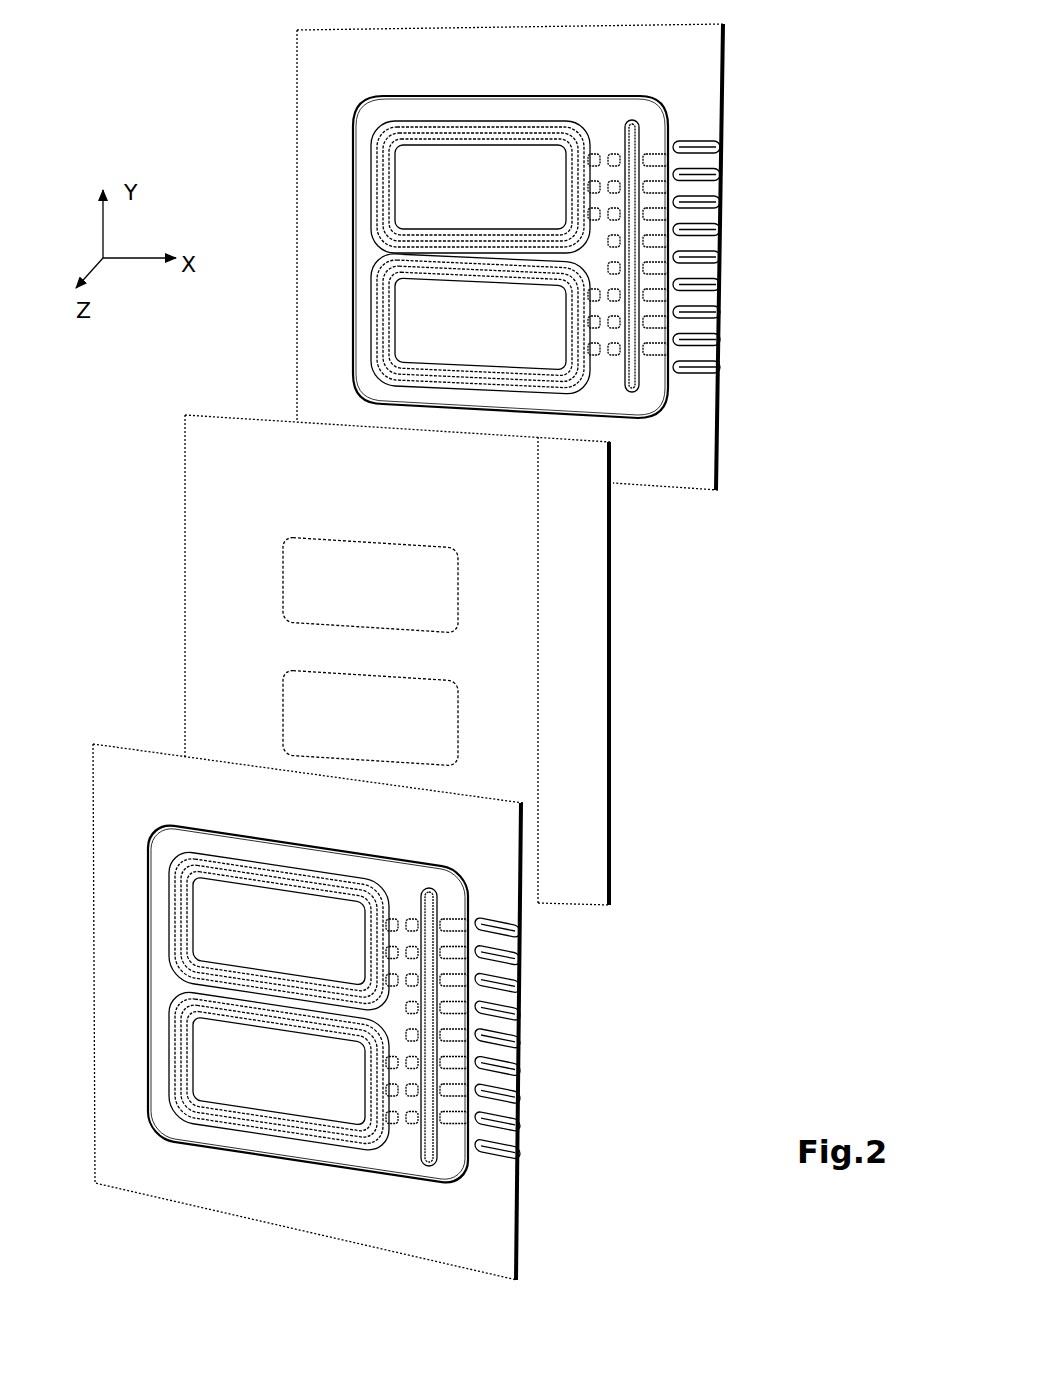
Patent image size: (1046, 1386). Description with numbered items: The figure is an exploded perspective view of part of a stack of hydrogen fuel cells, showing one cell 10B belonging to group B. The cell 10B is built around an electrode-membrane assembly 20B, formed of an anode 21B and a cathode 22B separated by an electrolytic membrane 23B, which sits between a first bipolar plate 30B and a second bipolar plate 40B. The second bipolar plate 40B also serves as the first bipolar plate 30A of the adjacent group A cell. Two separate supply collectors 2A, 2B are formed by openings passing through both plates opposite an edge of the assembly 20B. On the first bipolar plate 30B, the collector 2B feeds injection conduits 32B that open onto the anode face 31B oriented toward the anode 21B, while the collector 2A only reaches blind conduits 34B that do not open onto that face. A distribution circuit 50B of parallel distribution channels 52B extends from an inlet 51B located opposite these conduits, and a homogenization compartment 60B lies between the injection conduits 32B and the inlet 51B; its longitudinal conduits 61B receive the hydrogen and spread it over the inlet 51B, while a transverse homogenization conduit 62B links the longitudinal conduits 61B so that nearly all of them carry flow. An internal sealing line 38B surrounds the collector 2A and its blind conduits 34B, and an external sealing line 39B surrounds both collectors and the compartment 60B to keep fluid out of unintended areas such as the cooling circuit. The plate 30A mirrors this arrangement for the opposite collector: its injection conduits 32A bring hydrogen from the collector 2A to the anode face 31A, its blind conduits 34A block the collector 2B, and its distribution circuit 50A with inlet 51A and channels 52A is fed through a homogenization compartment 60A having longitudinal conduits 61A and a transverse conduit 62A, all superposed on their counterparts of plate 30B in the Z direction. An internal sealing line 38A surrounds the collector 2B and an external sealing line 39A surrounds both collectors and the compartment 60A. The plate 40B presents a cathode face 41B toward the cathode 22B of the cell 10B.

The cell 10B is at (172, 126).
The electrode-membrane assembly 20B is at (670, 677).
The anode 21B is at (572, 621).
The cathode 22B is at (585, 738).
The electrolytic membrane 23B is at (612, 655).
The supply collector 2A is at (370, 718).
The supply collector 2B is at (370, 585).
The first bipolar plate 30A is at (542, 984).
The first bipolar plate 30B is at (728, 75).
The anode face 31A is at (480, 845).
The anode face 31B is at (700, 50).
The injection conduits 32A is at (392, 1142).
The injection conduits 32B is at (600, 138).
The blind conduits 34A is at (391, 913).
The blind conduits 34B is at (599, 377).
The internal sealing line 38A is at (172, 850).
The internal sealing line 38B is at (374, 270).
The external sealing line 39A is at (151, 985).
The external sealing line 39B is at (352, 168).
The second bipolar plate 40B is at (402, 1027).
The cathode face 41B is at (483, 883).
The distribution circuit 50A is at (533, 1122).
The distribution circuit 50B is at (721, 388).
The inlet 51A is at (458, 1182).
The inlet 51B is at (673, 399).
The distribution channels 52A is at (519, 1003).
The distribution channels 52B is at (726, 278).
The homogenization compartment 60A is at (434, 1181).
The homogenization compartment 60B is at (634, 105).
The longitudinal conduits 61A is at (483, 1180).
The longitudinal conduits 61B is at (664, 157).
The transverse homogenization conduit 62A is at (420, 1170).
The transverse homogenization conduit 62B is at (627, 120).